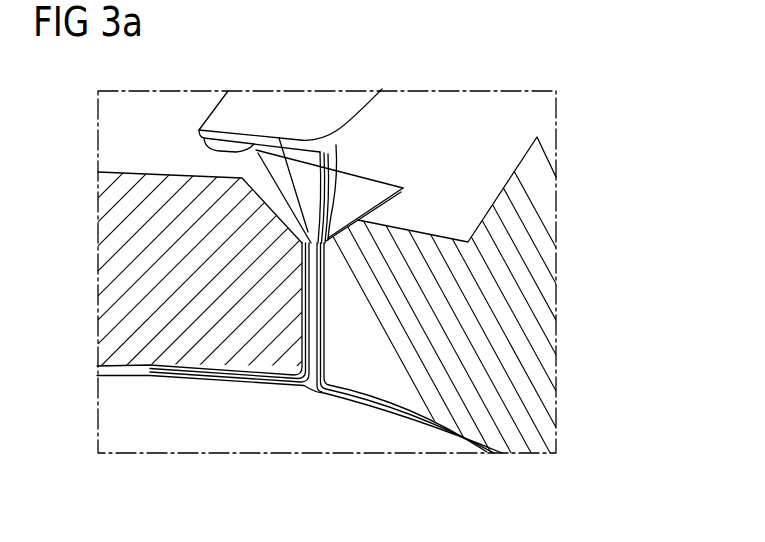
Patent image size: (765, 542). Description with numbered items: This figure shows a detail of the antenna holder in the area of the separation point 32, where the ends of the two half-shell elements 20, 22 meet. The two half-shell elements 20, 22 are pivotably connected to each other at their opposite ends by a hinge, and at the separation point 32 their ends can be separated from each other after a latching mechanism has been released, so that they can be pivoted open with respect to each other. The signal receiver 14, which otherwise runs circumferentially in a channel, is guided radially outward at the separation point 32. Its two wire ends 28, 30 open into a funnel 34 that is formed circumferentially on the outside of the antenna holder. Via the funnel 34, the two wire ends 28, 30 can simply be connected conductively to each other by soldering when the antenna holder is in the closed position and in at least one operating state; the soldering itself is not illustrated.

The signal receiver 14 is at (208, 375).
The half-shell element 20 is at (119, 252).
The half-shell element 22 is at (537, 395).
The wire end 28 is at (276, 134).
The wire end 30 is at (340, 195).
The separation point 32 is at (306, 140).
The funnel 34 is at (326, 140).